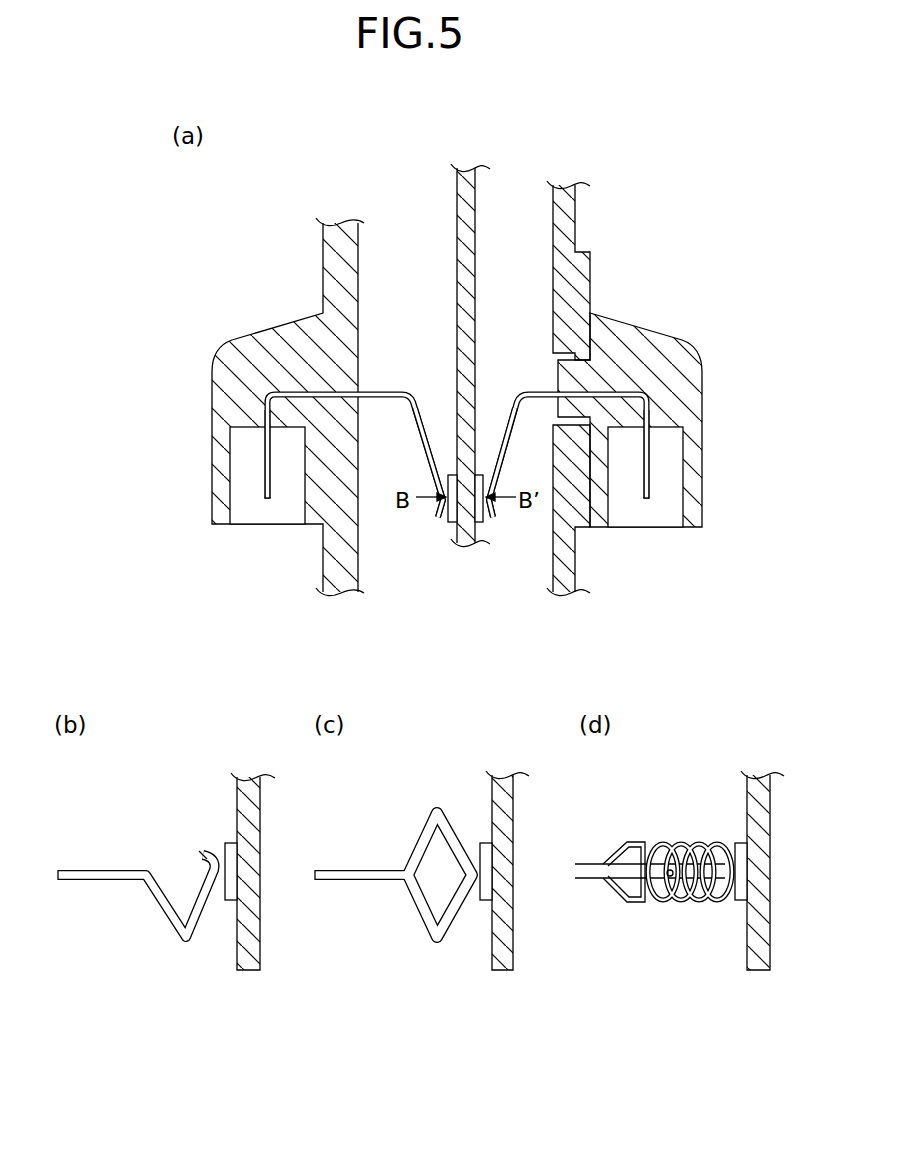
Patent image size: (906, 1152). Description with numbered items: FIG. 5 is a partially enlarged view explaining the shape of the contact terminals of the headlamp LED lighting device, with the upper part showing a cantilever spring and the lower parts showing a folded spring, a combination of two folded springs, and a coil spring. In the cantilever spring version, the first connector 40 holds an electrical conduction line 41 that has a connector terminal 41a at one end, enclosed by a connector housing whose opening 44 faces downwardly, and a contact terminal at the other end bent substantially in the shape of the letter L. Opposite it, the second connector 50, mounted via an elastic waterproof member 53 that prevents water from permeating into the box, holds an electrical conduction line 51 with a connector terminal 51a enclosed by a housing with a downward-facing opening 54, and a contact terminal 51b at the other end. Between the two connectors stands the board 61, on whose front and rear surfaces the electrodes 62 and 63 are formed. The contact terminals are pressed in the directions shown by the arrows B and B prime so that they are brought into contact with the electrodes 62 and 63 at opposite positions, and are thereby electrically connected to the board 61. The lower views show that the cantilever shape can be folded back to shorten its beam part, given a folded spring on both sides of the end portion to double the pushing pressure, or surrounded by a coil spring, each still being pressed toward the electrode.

The first connector 40 is at (250, 352).
The electrical conduction line 41 is at (300, 388).
The connector terminal 41a is at (263, 484).
The opening 44 is at (288, 514).
The second connector 50 is at (668, 346).
The electrical conduction line 51 is at (634, 378).
The connector terminal 51a is at (654, 480).
The contact terminal 51b is at (496, 472).
The waterproof member 53 is at (583, 256).
The opening 54 is at (646, 515).
The board 61 is at (470, 190).
The electrode 62 is at (451, 524).
The electrode 63 is at (480, 524).